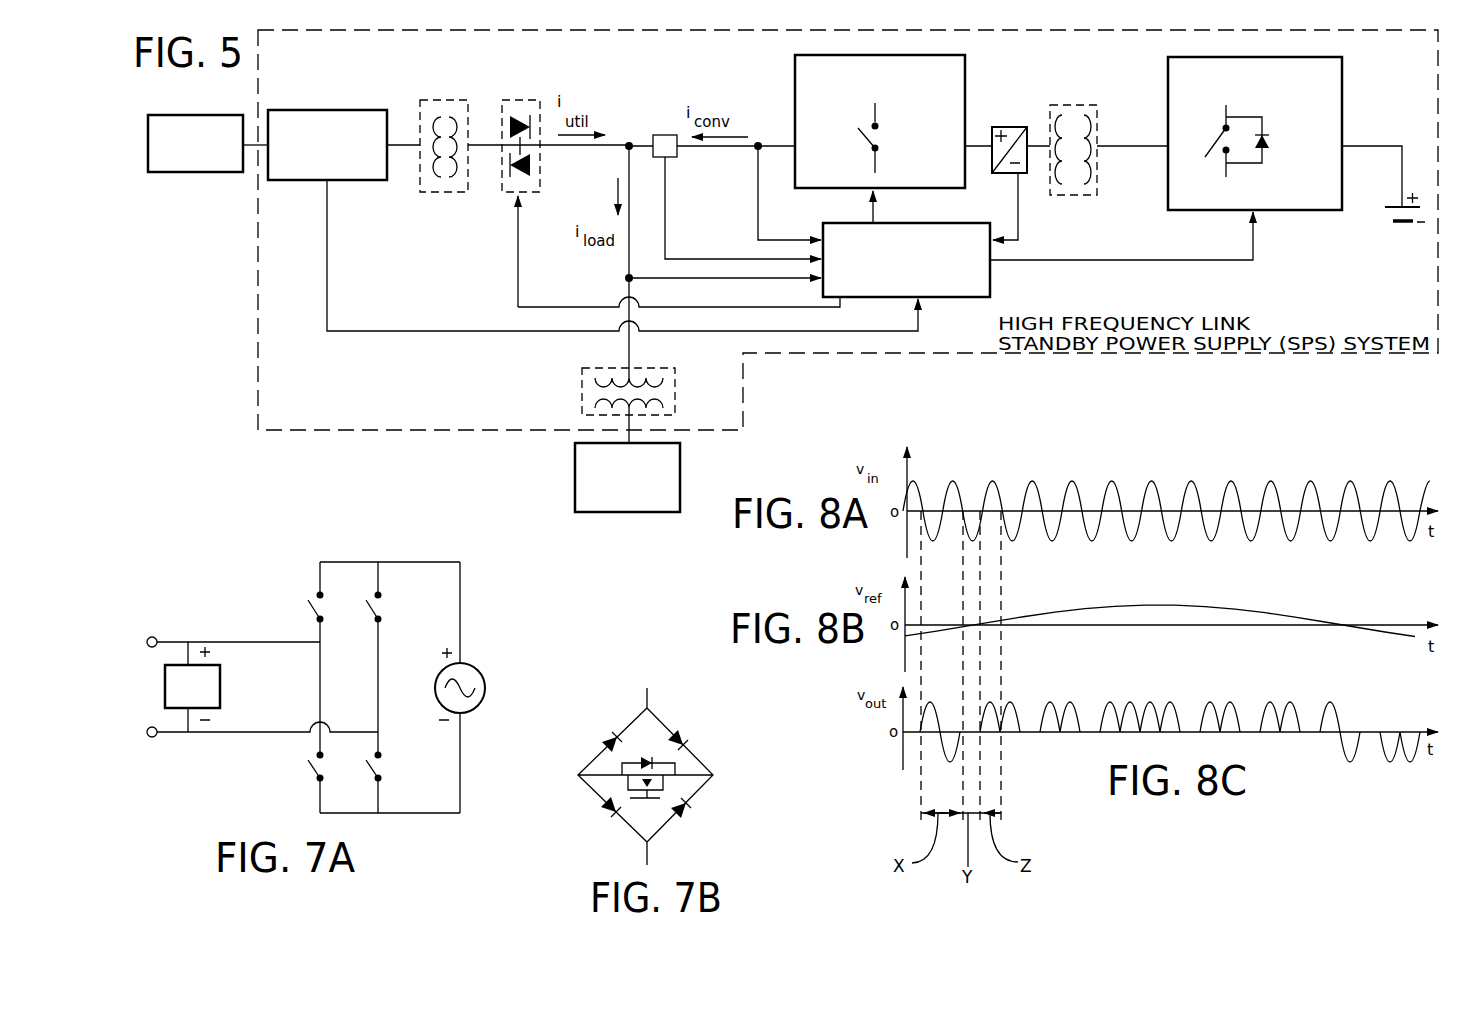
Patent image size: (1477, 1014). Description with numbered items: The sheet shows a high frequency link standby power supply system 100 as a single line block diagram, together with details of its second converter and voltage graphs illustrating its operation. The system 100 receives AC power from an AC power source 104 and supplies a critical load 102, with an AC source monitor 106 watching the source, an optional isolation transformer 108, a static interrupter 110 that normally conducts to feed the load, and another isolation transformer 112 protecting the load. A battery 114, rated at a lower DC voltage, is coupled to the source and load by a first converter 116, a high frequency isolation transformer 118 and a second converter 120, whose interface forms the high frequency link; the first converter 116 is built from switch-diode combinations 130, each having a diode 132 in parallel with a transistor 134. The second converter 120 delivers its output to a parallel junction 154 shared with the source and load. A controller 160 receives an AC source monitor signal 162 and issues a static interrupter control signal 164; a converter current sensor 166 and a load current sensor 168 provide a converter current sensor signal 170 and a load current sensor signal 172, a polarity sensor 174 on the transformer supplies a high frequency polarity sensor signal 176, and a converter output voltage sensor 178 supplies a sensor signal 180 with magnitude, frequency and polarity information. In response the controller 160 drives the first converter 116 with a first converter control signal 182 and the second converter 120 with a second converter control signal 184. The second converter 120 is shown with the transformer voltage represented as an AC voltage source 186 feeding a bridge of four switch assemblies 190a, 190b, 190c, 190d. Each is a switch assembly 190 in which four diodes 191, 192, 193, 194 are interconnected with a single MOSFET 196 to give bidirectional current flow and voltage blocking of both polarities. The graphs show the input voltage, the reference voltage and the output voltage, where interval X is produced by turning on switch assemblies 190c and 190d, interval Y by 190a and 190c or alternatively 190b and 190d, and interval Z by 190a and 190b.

In FIG. 5, the high frequency link standby power supply system 100 is at (328, 395).
In FIG. 5, the critical load 102 is at (578, 488).
In FIG. 5, the AC power source 104 is at (190, 174).
In FIG. 5, the AC source monitor 106 is at (345, 118).
In FIG. 5, the isolation transformer 108 is at (443, 100).
In FIG. 5, the static interrupter 110 is at (517, 100).
In FIG. 5, the isolation transformer 112 is at (583, 393).
In FIG. 5, the battery 114 is at (1384, 218).
In FIG. 5, the first converter 116 is at (1284, 128).
In FIG. 5, the high frequency isolation transformer 118 is at (1078, 196).
In FIG. 5, the second converter 120 is at (807, 71).
In FIG. 7A, the second converter 120 is at (307, 548).
In FIG. 5, the switch-diode combination 130 is at (1257, 168).
In FIG. 5, the diode 132 is at (1268, 140).
In FIG. 5, the transistor 134 is at (1207, 156).
In FIG. 5, the parallel junction 154 is at (629, 140).
In FIG. 5, the controller 160 is at (975, 283).
In FIG. 5, the AC source monitor signal 162 is at (423, 329).
In FIG. 5, the static interrupter control signal 164 is at (517, 248).
In FIG. 5, the converter current sensor 166 is at (758, 141).
In FIG. 5, the load current sensor 168 is at (624, 280).
In FIG. 5, the converter current sensor signal 170 is at (757, 196).
In FIG. 5, the load current sensor signal 172 is at (717, 279).
In FIG. 5, the polarity sensor 174 is at (1008, 128).
In FIG. 5, the high frequency polarity sensor signal 176 is at (1020, 210).
In FIG. 5, the converter output voltage sensor 178 is at (664, 135).
In FIG. 7A, the converter output voltage sensor 178 is at (220, 678).
In FIG. 5, the sensor signal 180 is at (732, 258).
In FIG. 7A, the sensor signal 180 is at (137, 690).
In FIG. 5, the first converter control signal 182 is at (1112, 262).
In FIG. 5, the second converter control signal 184 is at (878, 221).
In FIG. 7B, the second converter control signal 184 is at (647, 800).
In FIG. 7A, the AC voltage source 186 is at (466, 666).
In FIG. 7B, the switch assembly 190 is at (605, 828).
In FIG. 7A, the switch assembly 190a is at (312, 610).
In FIG. 7A, the switch assembly 190b is at (384, 767).
In FIG. 7A, the switch assembly 190c is at (375, 610).
In FIG. 7A, the switch assembly 190d is at (312, 768).
In FIG. 7B, the diode 191 is at (600, 808).
In FIG. 7B, the diode 192 is at (605, 739).
In FIG. 7B, the diode 193 is at (679, 741).
In FIG. 7B, the diode 194 is at (686, 816).
In FIG. 7B, the MOSFET 196 is at (612, 783).